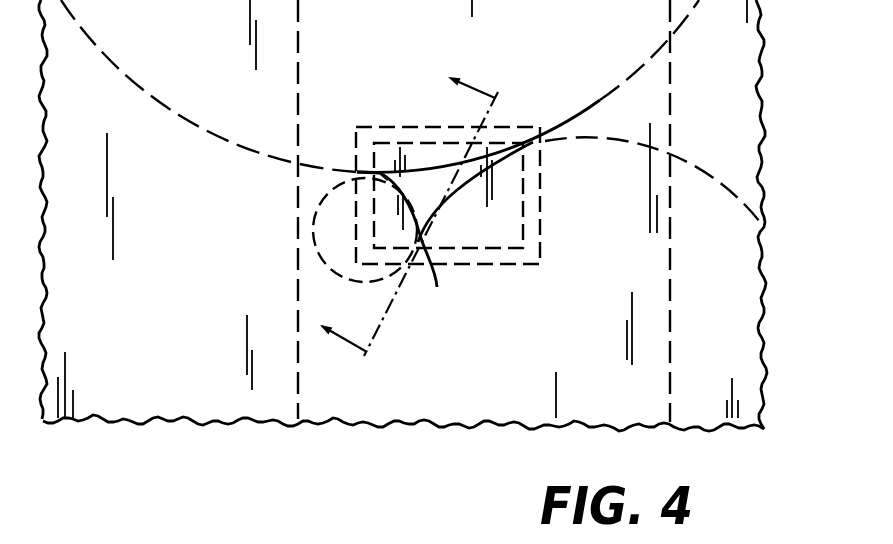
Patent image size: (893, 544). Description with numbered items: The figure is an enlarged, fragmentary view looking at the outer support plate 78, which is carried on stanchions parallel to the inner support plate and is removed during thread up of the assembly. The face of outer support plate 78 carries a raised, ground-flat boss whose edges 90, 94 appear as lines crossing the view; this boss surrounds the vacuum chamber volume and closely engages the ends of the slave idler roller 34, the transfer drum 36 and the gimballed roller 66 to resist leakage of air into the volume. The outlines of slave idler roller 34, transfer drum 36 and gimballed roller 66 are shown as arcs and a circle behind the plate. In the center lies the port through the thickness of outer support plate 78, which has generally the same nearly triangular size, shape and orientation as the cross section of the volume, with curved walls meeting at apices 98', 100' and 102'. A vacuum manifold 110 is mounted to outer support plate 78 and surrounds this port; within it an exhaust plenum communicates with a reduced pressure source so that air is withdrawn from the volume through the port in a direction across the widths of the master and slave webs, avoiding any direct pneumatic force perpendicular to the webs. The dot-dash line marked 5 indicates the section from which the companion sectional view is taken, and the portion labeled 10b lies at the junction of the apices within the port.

The section line 5- 5 is at (409, 201).
The blade portion 10b is at (462, 172).
The slave idler roller 34 is at (724, 207).
The transfer drum 36 is at (650, 58).
The gimballed roller 66 is at (312, 226).
The outer support plate 78 is at (748, 66).
The edge of boss 90 is at (298, 330).
The edge of boss 94 is at (670, 329).
The apex of port 98' is at (480, 144).
The apex of port 100' is at (425, 247).
The apex of port 102' is at (392, 127).
The vacuum manifold 110 is at (543, 234).